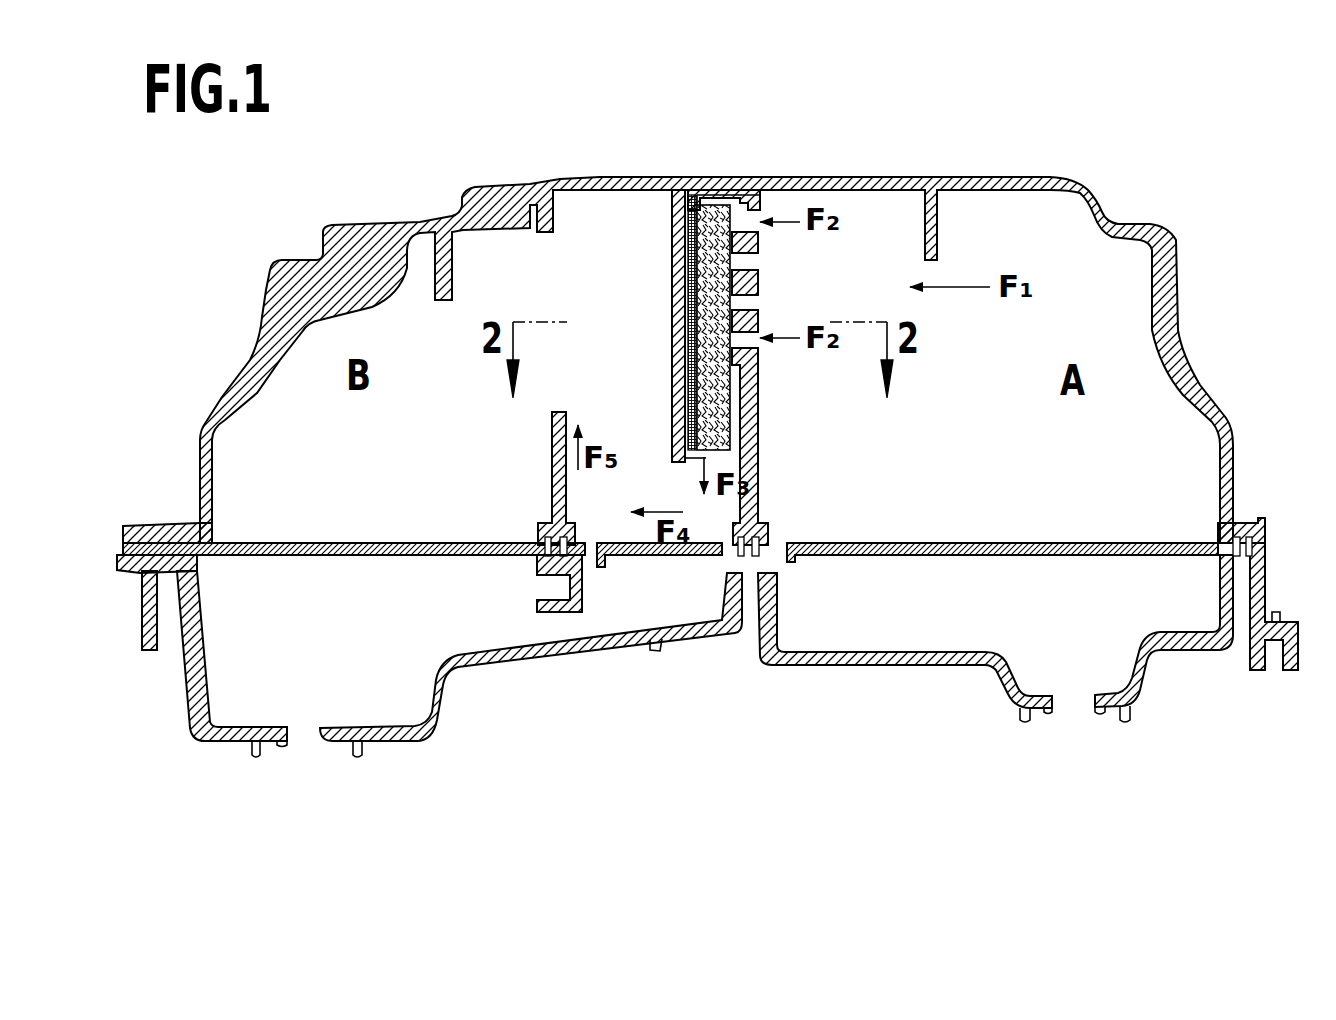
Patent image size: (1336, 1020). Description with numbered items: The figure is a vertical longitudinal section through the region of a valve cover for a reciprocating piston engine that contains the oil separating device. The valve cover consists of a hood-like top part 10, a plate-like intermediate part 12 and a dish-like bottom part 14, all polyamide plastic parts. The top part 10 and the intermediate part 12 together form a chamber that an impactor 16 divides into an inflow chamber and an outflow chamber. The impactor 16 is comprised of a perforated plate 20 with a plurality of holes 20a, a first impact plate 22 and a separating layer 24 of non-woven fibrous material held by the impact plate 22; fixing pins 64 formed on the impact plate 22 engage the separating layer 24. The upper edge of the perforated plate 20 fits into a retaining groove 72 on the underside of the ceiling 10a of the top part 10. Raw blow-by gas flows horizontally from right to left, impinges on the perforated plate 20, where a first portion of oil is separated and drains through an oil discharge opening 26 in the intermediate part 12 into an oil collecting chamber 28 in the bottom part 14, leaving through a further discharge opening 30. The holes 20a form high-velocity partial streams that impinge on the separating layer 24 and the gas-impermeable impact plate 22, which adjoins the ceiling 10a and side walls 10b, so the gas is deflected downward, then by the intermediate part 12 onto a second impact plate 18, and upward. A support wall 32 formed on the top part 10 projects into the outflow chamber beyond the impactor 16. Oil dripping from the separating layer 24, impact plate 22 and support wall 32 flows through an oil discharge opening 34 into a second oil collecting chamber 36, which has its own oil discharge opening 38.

The top part 10 is at (722, 319).
The ceiling 10a is at (1024, 178).
The side walls 10b is at (1062, 479).
The intermediate part 12 is at (670, 603).
The bottom part 14 is at (521, 695).
The impactor 16 is at (735, 327).
The second impact plate 18 is at (538, 458).
The perforated plate 20 is at (775, 327).
The holes 20a is at (753, 263).
The first impact plate 22 is at (670, 378).
The separating layer 24 is at (730, 422).
The oil discharge opening 26 is at (790, 562).
The oil collecting chamber 28 is at (978, 622).
The further discharge opening 30 is at (1070, 694).
The support wall 32 is at (672, 225).
The oil discharge opening 34 is at (605, 565).
The second oil collecting chamber 36 is at (425, 618).
The oil discharge opening 38 is at (300, 735).
The fixing pins 64 is at (672, 284).
The retaining groove 72 is at (759, 198).